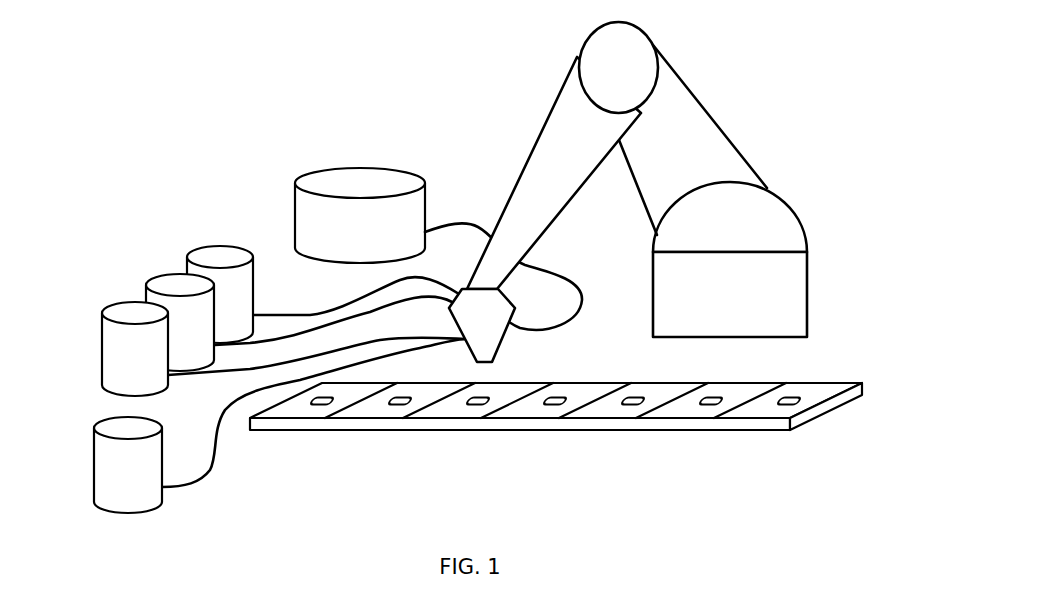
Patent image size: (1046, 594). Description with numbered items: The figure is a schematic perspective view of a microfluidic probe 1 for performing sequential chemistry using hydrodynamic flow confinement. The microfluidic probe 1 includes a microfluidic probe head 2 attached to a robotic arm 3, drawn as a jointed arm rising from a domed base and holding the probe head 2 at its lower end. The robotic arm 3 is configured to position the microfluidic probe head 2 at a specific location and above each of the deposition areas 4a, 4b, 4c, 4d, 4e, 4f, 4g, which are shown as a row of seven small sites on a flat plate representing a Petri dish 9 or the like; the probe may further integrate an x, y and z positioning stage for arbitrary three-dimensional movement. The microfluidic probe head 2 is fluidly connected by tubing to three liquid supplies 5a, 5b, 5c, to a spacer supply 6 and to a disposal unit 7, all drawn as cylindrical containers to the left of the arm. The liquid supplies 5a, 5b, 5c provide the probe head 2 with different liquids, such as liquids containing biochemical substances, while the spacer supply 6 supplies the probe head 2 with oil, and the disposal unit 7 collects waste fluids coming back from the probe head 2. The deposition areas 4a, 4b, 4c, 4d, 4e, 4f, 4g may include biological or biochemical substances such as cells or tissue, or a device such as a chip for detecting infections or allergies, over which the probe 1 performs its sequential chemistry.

The microfluidic probe 1 is at (762, 0).
The microfluidic probe head 2 is at (490, 338).
The robotic arm 3 is at (569, 81).
The deposition area 4a is at (323, 405).
The deposition area 4b is at (401, 405).
The deposition area 4c is at (479, 405).
The deposition area 4d is at (556, 405).
The deposition area 4e is at (634, 405).
The deposition area 4f is at (712, 405).
The deposition area 4g is at (790, 405).
The liquid supply 5a is at (207, 258).
The liquid supply 5b is at (178, 288).
The liquid supply 5c is at (138, 318).
The spacer supply 6 is at (117, 475).
The disposal unit 7 is at (313, 225).
The Petri dish 9 is at (808, 413).